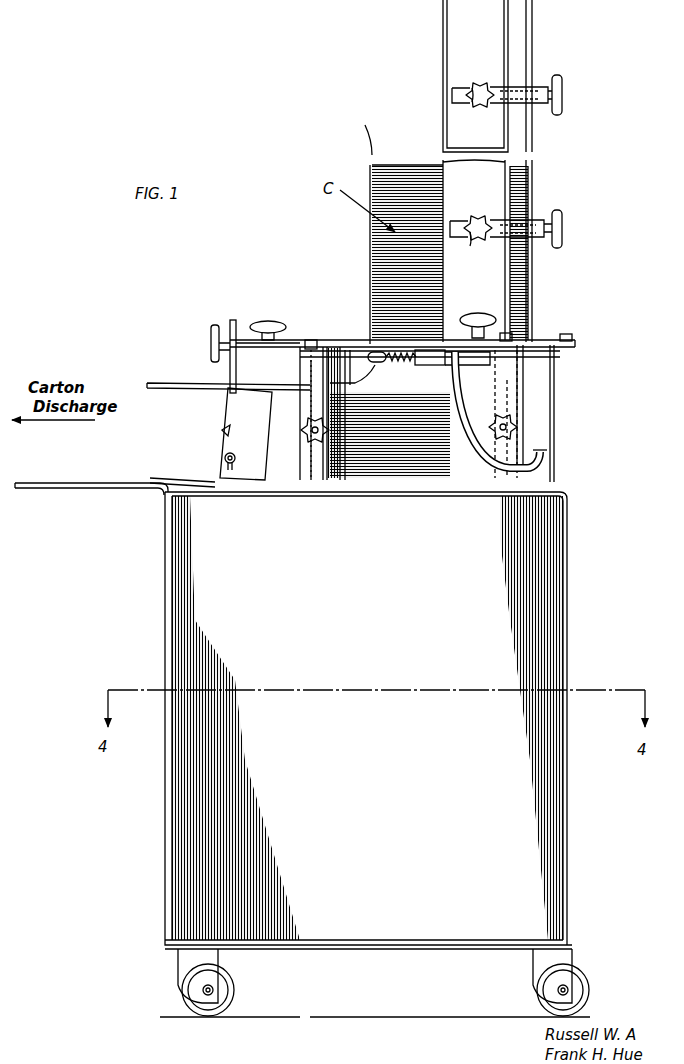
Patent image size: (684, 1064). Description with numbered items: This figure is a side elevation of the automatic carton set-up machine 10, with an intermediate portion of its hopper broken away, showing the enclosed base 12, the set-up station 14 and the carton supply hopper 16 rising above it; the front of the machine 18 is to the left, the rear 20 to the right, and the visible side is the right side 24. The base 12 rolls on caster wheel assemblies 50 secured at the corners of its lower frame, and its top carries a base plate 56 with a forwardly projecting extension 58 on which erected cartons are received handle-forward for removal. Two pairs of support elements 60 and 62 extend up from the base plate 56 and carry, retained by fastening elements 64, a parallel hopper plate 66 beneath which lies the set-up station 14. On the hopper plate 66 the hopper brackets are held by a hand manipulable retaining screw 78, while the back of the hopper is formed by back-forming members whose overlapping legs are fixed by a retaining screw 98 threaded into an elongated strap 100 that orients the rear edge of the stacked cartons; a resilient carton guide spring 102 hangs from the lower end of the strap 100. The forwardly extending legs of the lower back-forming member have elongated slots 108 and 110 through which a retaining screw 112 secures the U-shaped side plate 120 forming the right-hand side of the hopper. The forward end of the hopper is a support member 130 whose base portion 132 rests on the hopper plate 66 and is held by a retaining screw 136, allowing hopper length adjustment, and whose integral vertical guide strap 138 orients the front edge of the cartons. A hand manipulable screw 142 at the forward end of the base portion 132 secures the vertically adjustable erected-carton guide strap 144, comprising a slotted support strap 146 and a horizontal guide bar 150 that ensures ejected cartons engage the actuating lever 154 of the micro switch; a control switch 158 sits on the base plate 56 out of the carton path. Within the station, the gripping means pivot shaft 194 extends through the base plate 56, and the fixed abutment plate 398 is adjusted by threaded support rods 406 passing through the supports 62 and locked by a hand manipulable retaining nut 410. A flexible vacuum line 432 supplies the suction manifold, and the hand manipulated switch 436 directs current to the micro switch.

The automatic set-up machine 10 is at (595, 525).
The enclosed base 12 is at (570, 503).
The set-up station 14 is at (527, 392).
The carton supply hopper 16 is at (536, 182).
The front of the machine 18 is at (170, 570).
The rear of the machine 20 is at (568, 585).
The right side of the machine 24 is at (354, 577).
The caster wheel assemblies 50 is at (184, 963).
The base plate 56 is at (566, 480).
The forwardly projecting extension 58 is at (82, 482).
The support elements 60 is at (556, 446).
The support elements 62 is at (318, 470).
The fastening elements 64 is at (311, 340).
The hopper plate 66 is at (566, 340).
The hand manipulable retaining screw 78 is at (475, 315).
The hand manipulable retaining screw 98 is at (565, 90).
The elongated strap 100 is at (536, 134).
The carton guide spring 102 is at (552, 349).
The elongated slot 108 is at (460, 240).
The elongated slot 110 is at (458, 92).
The hand manipulable retaining screw 112 is at (487, 80).
The U-shaped side plate 120 is at (497, 40).
The support member 130 is at (248, 338).
The base portion 132 is at (333, 340).
The hand manipulable retaining screw 136 is at (274, 320).
The guide strap 138 is at (370, 250).
The hand manipulable screw 142 is at (210, 338).
The erected-carton guide strap 144 is at (273, 385).
The support strap 146 is at (232, 322).
The guide bar 150 is at (153, 382).
The actuating lever 154 is at (155, 478).
The control switch 158 is at (228, 410).
The gripping means pivot shaft 194 is at (428, 370).
The fixed abutment plate 398 is at (392, 435).
The threaded support rods 406 is at (330, 427).
The hand manipulable retaining nut 410 is at (325, 425).
The flexible vacuum line 432 is at (546, 458).
The hand manipulated switch 436 is at (225, 460).